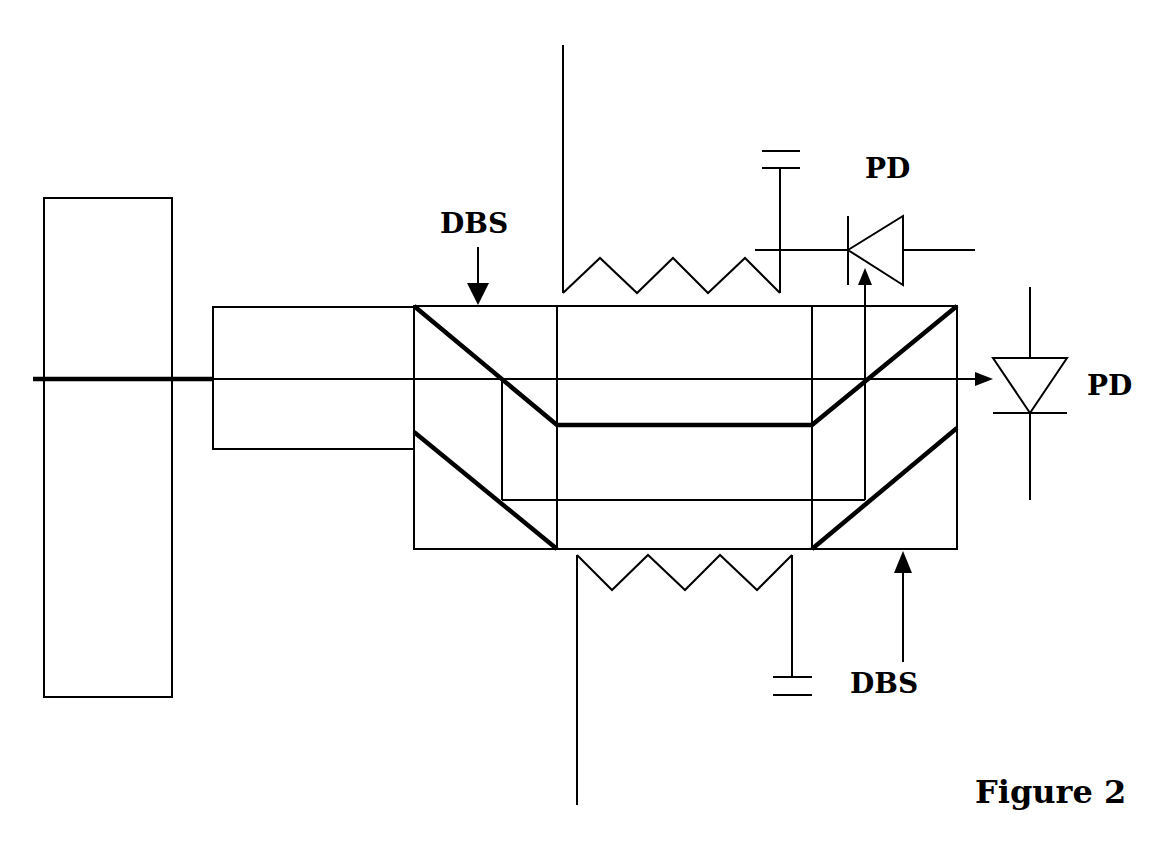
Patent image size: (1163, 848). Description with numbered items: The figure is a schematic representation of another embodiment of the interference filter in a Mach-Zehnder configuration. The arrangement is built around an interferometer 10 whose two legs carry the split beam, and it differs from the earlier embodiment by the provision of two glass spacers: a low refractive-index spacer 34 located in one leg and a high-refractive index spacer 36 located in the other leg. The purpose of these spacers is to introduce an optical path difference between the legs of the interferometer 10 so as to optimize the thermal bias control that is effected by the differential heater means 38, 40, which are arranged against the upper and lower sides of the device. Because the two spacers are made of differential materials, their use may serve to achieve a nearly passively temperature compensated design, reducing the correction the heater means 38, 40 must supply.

The interferometer 10 is at (398, 152).
The low refractive-index spacer 34 is at (620, 320).
The high-refractive index spacer 36 is at (584, 516).
The differential heater means 38 is at (613, 248).
The differential heater means 40 is at (755, 593).